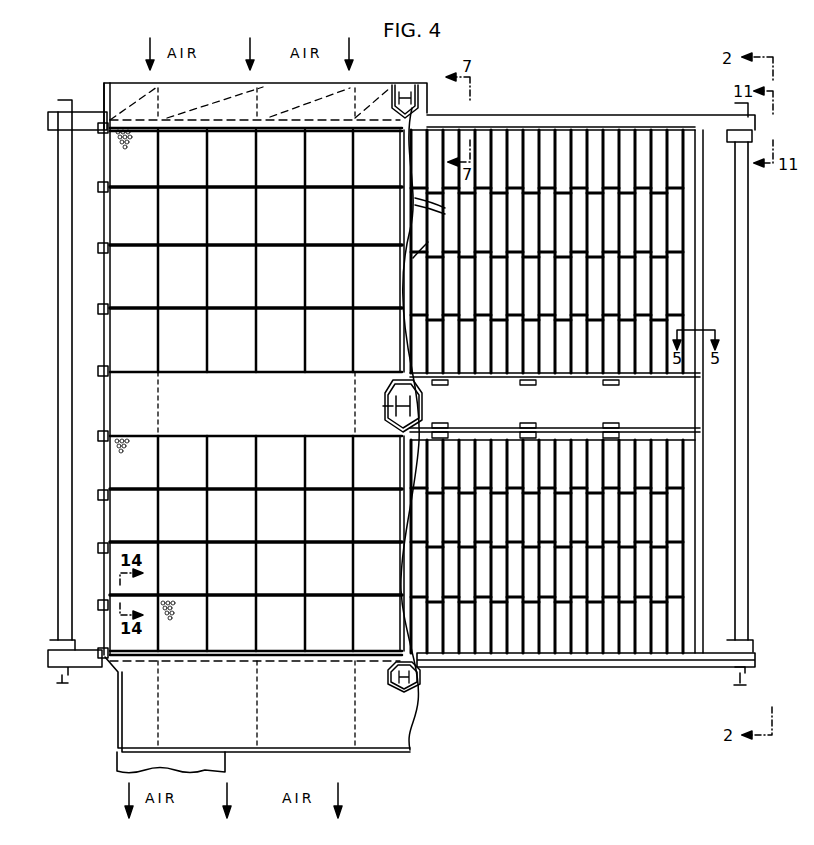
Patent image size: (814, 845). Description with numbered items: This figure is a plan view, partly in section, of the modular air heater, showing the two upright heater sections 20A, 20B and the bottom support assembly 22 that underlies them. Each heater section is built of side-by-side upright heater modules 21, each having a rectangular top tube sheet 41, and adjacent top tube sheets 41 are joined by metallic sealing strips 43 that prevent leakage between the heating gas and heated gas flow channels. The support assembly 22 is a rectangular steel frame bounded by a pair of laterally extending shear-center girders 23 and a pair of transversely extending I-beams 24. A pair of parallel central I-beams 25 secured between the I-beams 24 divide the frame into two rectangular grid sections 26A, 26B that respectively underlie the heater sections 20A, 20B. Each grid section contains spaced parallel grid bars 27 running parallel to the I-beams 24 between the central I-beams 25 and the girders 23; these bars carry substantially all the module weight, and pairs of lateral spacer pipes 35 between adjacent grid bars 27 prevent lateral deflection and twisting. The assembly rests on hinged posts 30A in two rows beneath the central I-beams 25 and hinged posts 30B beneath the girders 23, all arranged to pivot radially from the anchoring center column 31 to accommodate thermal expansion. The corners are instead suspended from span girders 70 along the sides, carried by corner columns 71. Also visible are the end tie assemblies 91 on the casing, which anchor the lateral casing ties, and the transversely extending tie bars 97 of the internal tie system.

The heater section 20A is at (98, 198).
The heater section 20B is at (98, 510).
The heater cell or module 21 is at (195, 345).
The bottom support assembly 22 is at (532, 112).
The shear-center girder 23 is at (606, 118).
The I-beam 24 is at (109, 402).
The central I-beam 25 is at (463, 432).
The grid section 26A is at (660, 268).
The grid section 26B is at (680, 583).
The grid bar 27 is at (415, 206).
The hinged post 30A is at (530, 385).
The hinged post 30B is at (396, 128).
The center column 31 is at (383, 402).
The lateral spacer pipe 35 is at (413, 258).
The top tube sheet 41 is at (127, 292).
The sealing strip 43 is at (190, 155).
The span girder 70 is at (62, 245).
The corner column 71 is at (68, 100).
The end tie assembly 91 is at (100, 308).
The tie bar 97 is at (330, 390).